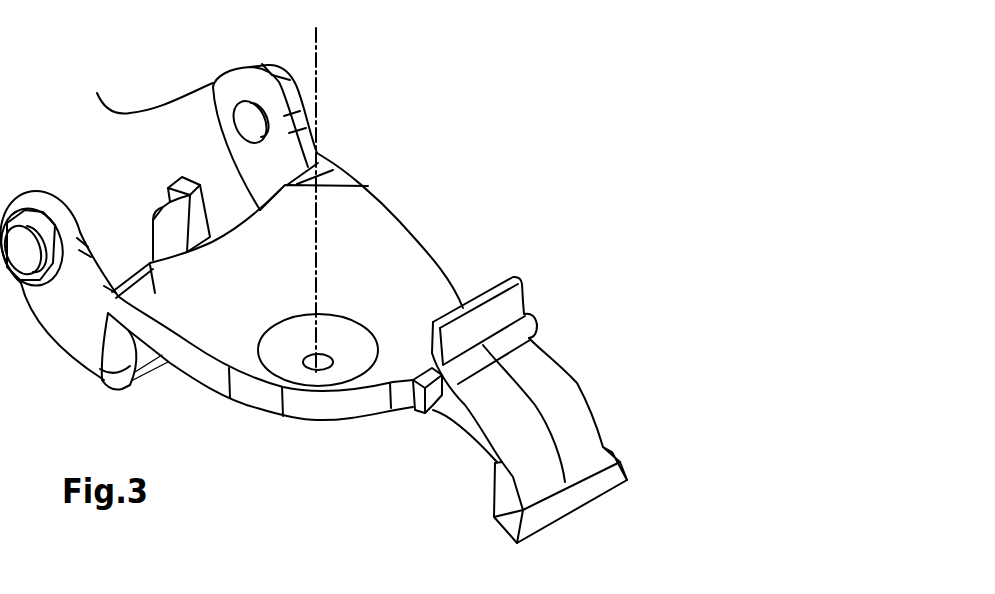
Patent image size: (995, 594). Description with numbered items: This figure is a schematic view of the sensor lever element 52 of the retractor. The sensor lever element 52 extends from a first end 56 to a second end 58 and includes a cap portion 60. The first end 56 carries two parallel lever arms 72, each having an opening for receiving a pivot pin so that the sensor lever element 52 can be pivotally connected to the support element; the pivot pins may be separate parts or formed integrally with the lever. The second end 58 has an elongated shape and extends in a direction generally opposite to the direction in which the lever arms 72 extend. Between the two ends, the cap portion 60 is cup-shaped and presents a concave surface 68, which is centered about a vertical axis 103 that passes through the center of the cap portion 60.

The sensor lever element 52 is at (465, 217).
The first end 56 is at (340, 95).
The second end 58 is at (578, 504).
The cap portion 60 is at (318, 405).
The concave surface 68 is at (367, 230).
The lever arms 72 is at (57, 206).
The vertical axis 103 is at (312, 28).